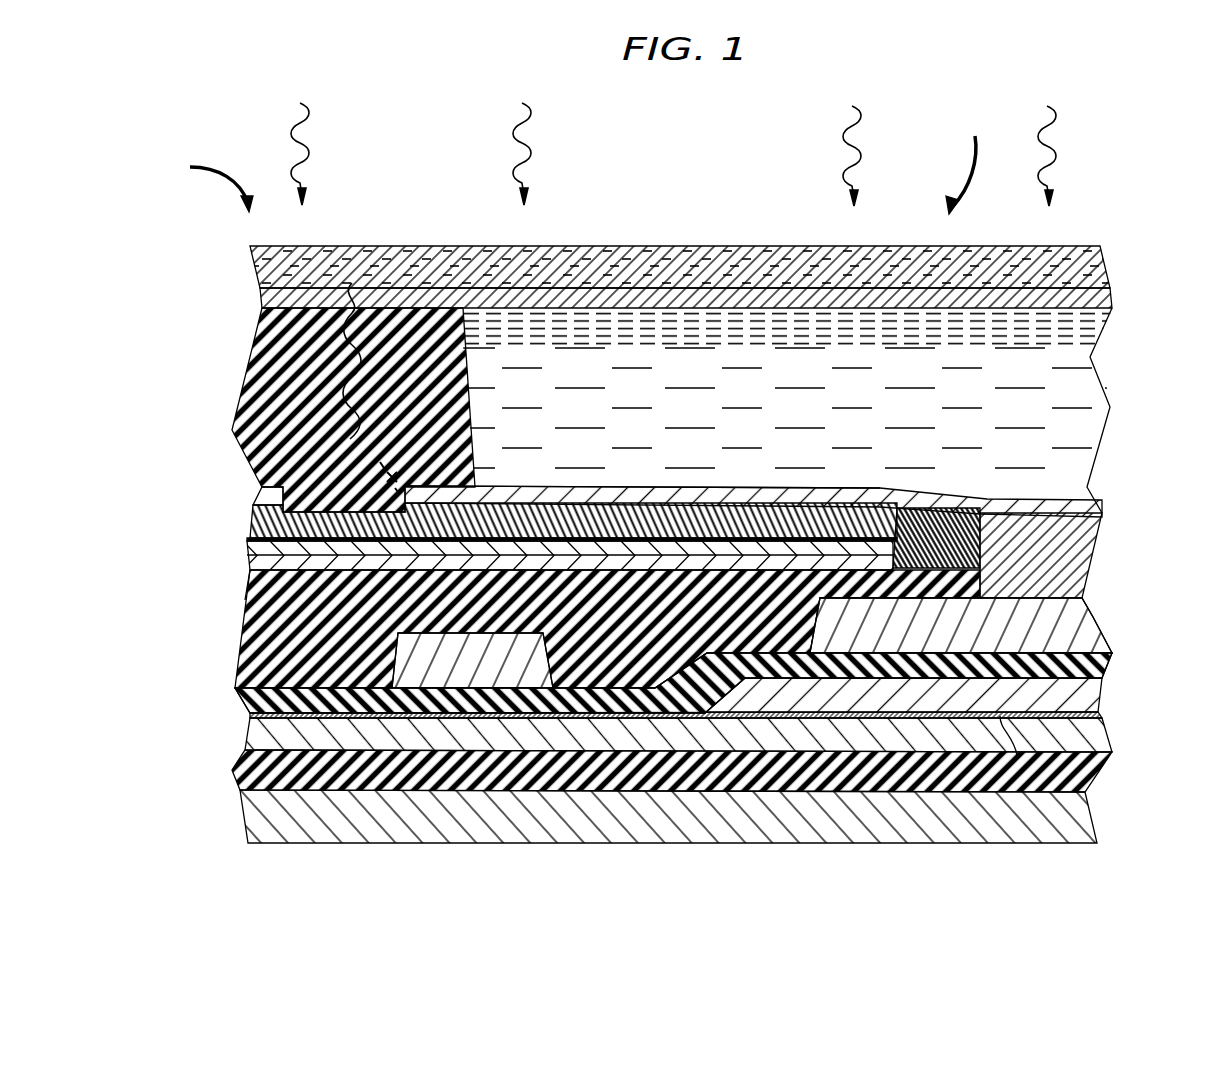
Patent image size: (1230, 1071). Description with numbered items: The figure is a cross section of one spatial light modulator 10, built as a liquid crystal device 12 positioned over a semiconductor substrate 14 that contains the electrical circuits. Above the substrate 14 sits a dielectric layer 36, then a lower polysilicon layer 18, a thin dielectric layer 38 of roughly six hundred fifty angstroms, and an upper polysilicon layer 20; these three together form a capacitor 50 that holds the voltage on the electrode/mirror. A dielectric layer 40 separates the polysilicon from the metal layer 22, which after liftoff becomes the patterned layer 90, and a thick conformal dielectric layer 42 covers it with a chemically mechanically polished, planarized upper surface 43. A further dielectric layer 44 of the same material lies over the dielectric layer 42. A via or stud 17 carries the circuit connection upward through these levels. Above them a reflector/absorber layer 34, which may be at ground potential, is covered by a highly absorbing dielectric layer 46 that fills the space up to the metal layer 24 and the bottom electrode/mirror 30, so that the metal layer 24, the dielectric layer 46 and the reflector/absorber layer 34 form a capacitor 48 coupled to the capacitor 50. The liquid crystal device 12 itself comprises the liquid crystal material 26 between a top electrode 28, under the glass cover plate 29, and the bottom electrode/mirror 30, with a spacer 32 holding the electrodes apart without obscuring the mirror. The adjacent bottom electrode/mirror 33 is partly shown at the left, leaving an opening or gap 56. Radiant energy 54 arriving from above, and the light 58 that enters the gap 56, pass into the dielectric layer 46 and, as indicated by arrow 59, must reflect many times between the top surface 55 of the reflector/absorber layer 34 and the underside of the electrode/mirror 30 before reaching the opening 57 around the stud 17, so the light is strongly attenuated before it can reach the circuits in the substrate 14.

The spatial light modulator 10 is at (206, 183).
The liquid crystal device 12 is at (962, 159).
The substrate 14 is at (250, 815).
The via or stud 17 is at (1088, 547).
The polysilicon layer 18 is at (1104, 740).
The polysilicon layer 20 is at (1102, 688).
The metal layer 22 is at (781, 747).
The metal layer 24 is at (640, 492).
The liquid crystal material 26 is at (1024, 449).
The top electrode 28 is at (1102, 302).
The glass cover plate 29 is at (252, 264).
The bottom electrode/mirror 30 is at (1092, 503).
The spacer 32 is at (258, 410).
The bottom electrode/mirror 33 is at (486, 492).
The reflector/absorber layer 34 is at (248, 548).
The dielectric layer 36 is at (234, 770).
The thin dielectric layer 38 is at (250, 720).
The dielectric layer 40 is at (247, 700).
The dielectric layer 42 is at (252, 660).
The upper surface 43 is at (241, 600).
The dielectric layer 44 is at (559, 628).
The dielectric layer 46 is at (258, 492).
The capacitor 48 is at (648, 500).
The capacitor 50 is at (1017, 755).
The radiant energy 54 is at (310, 173).
The top surface 55 is at (250, 522).
The opening or gap 56 is at (265, 483).
The opening 57 is at (900, 510).
The light 58 is at (253, 340).
The arrow 59 is at (467, 453).
The patterned layer 90 is at (417, 668).